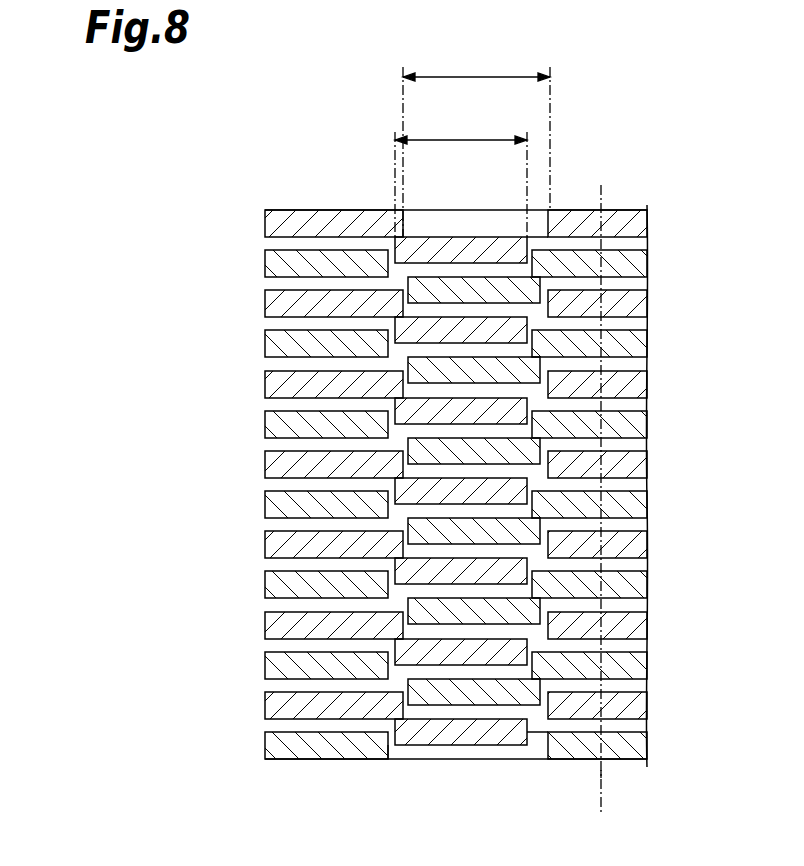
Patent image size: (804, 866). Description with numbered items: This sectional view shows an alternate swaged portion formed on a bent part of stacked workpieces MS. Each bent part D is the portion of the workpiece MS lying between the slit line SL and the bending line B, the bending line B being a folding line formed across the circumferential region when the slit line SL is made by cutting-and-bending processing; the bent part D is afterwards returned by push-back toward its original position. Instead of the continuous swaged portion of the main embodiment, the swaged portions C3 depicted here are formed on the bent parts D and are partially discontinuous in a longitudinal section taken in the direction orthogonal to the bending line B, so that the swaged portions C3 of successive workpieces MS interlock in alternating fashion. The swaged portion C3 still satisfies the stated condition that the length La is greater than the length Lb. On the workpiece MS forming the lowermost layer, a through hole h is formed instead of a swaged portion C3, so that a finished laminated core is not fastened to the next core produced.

The slit line SL is at (276, 228).
The workpiece MS is at (630, 234).
The swaged portion C3 is at (453, 248).
The length La is at (477, 77).
The length Lb is at (465, 140).
The bent part D is at (586, 222).
The bending line B is at (601, 778).
The through hole h is at (398, 748).